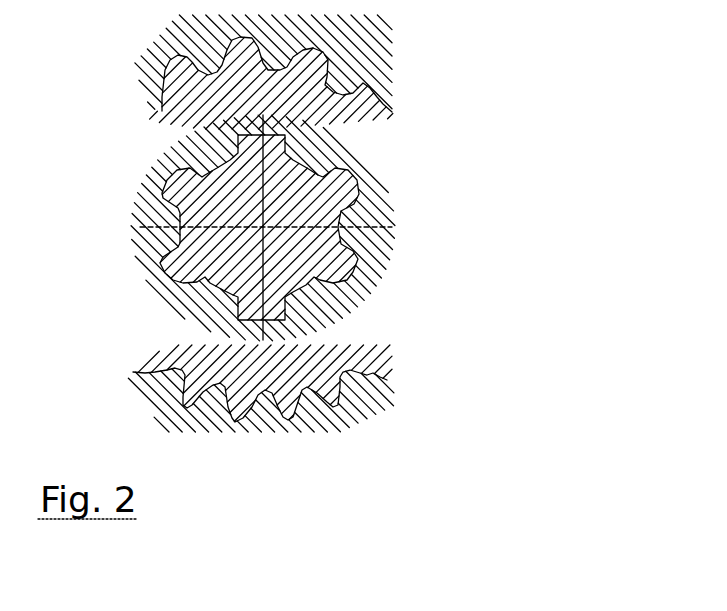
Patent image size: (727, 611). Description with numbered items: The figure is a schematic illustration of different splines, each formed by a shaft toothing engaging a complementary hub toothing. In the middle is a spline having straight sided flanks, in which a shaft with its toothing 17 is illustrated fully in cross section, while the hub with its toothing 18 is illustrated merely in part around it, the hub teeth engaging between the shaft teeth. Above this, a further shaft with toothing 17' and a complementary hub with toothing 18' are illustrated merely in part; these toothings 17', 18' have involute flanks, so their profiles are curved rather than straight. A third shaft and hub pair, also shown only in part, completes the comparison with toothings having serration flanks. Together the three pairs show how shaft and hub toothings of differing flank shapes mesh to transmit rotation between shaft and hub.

The toothing 17 is at (372, 227).
The toothing 18 is at (357, 228).
The toothing 17' is at (370, 83).
The toothing 18' is at (362, 62).